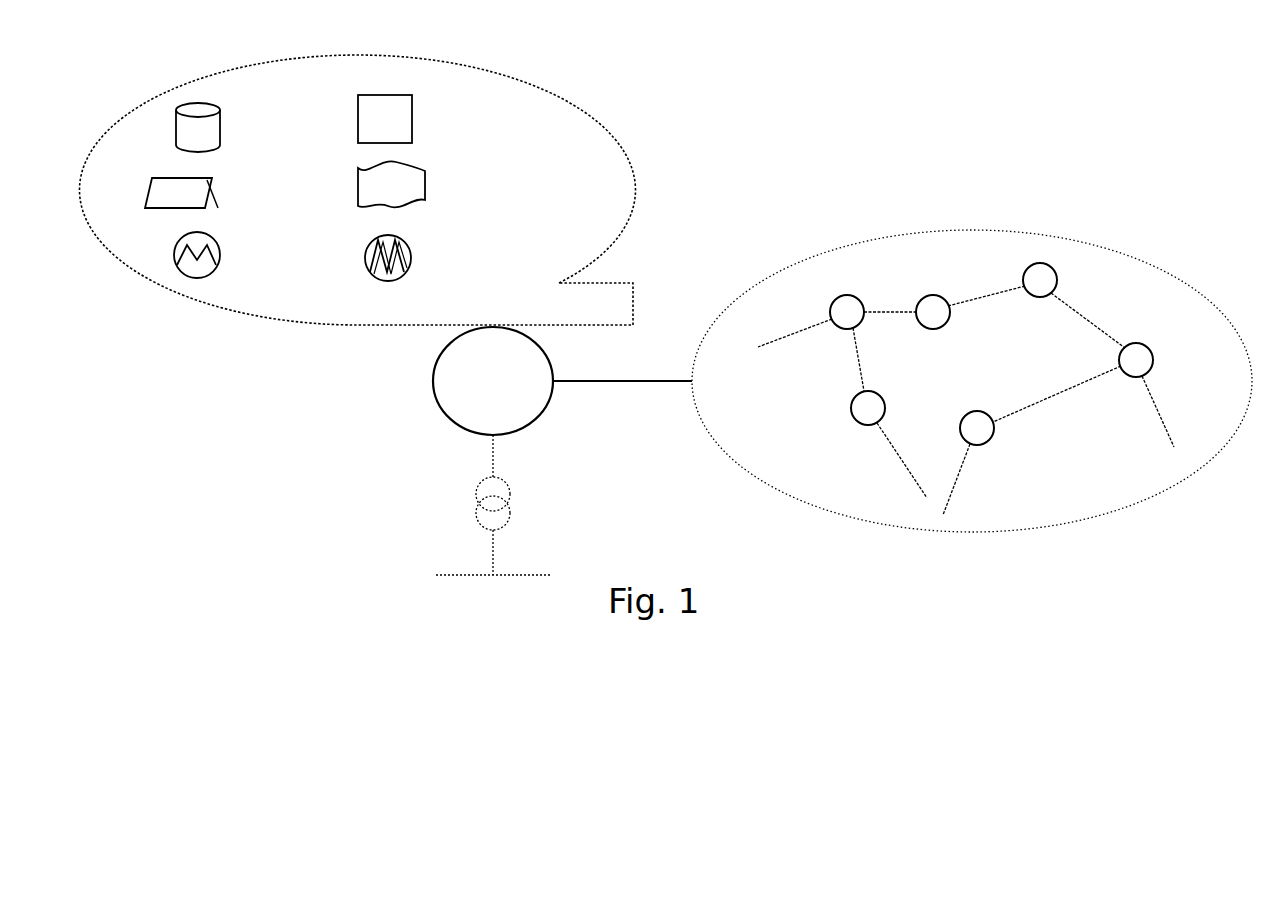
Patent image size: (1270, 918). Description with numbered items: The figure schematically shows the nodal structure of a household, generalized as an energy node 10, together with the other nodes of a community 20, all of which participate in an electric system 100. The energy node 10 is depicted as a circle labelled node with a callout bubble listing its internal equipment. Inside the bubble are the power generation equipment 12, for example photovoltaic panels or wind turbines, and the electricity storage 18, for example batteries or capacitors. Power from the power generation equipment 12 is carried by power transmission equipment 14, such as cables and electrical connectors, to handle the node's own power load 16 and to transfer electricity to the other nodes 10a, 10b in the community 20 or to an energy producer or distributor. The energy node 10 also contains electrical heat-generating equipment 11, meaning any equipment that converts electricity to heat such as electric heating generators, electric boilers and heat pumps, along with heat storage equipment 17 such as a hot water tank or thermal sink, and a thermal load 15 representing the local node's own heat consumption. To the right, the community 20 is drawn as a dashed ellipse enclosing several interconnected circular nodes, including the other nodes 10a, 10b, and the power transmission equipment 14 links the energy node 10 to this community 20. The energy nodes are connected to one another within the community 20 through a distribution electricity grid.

The electric system 100 is at (688, 661).
The energy node 10 is at (163, 90).
The other node 10a is at (992, 445).
The other node 10b is at (1157, 368).
The electrical heat-generating equipment 11 is at (398, 199).
The power generation equipment 12 is at (191, 206).
The power transmission equipment 14 is at (590, 384).
The thermal load 15 is at (430, 301).
The power load 16 is at (234, 299).
The heat storage equipment 17 is at (392, 131).
The electricity storage 18 is at (211, 145).
The community 20 is at (1165, 257).